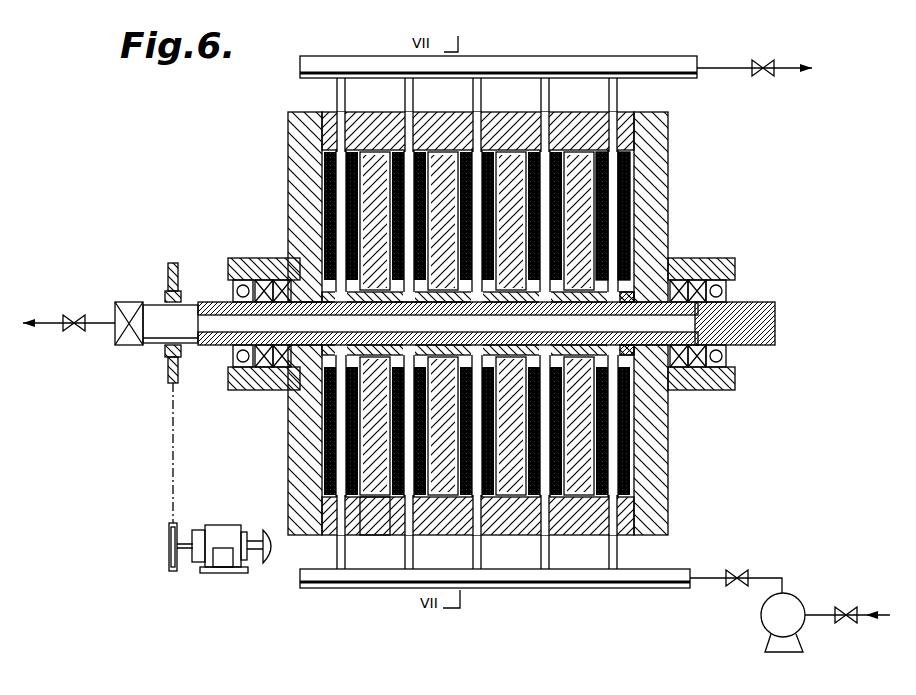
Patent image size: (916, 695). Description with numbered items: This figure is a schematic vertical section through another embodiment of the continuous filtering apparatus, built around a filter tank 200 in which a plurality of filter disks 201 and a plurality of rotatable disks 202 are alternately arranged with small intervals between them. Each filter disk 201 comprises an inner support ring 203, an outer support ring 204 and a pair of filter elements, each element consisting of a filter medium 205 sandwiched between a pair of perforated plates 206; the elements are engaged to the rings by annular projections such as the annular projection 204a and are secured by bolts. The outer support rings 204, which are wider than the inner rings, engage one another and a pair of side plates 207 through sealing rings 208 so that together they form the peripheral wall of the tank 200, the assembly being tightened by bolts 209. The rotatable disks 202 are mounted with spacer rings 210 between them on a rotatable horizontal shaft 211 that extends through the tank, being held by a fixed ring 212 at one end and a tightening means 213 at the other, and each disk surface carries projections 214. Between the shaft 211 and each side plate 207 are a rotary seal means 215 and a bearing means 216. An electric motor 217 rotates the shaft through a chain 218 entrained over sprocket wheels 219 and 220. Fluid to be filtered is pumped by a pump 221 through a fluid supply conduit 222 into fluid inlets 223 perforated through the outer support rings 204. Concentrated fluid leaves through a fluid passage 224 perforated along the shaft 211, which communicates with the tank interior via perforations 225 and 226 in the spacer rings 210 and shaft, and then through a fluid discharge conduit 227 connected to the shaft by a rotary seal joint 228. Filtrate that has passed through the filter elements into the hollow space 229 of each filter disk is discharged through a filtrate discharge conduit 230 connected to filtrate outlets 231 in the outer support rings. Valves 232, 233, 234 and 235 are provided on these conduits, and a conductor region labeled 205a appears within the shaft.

The filter tank 200 is at (480, 325).
The filter disk 201 is at (557, 150).
The rotatable disk 202 is at (442, 165).
The inner support ring 203 is at (652, 278).
The outer support ring 204 is at (517, 128).
The annular projection 204a is at (368, 520).
The filter medium 205 is at (322, 215).
The conductor 205a is at (318, 306).
The perforated plate 206 is at (624, 150).
The side plate 207 is at (300, 147).
The sealing ring 208 is at (332, 120).
The bolt 209 is at (410, 304).
The spacer ring 210 is at (372, 304).
The rotatable horizontal shaft 211 is at (758, 318).
The fixed ring 212 is at (722, 280).
The tightening means 213 is at (290, 262).
The projection 214 is at (628, 222).
The rotary seal means 215 is at (270, 380).
The bearing means 216 is at (240, 380).
The electric motor 217 is at (228, 560).
The chain 218 is at (170, 420).
The sprocket wheel 219 is at (168, 280).
The sprocket wheel 220 is at (168, 532).
The pump 221 is at (790, 610).
The fluid supply conduit 222 is at (650, 586).
The fluid inlet 223 is at (440, 545).
The fluid passage 224 is at (215, 330).
The perforation 225 is at (452, 304).
The perforation 226 is at (626, 304).
The fluid discharge conduit 227 is at (62, 318).
The rotary seal joint 228 is at (128, 338).
The hollow space 229 is at (325, 450).
The filtrate discharge conduit 230 is at (690, 66).
The filtrate outlet 231 is at (530, 128).
The valve 232 is at (848, 605).
The valve 233 is at (748, 570).
The valve 234 is at (70, 330).
The valve 235 is at (766, 78).